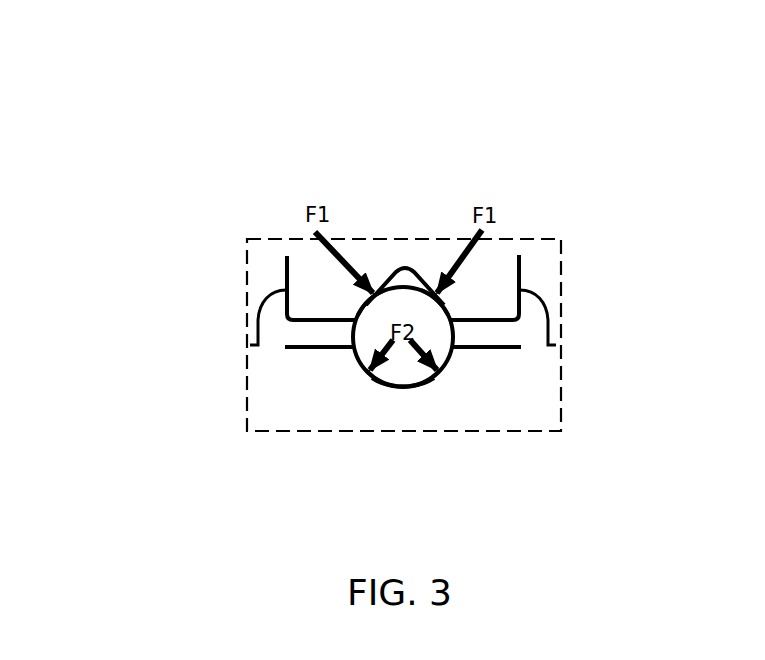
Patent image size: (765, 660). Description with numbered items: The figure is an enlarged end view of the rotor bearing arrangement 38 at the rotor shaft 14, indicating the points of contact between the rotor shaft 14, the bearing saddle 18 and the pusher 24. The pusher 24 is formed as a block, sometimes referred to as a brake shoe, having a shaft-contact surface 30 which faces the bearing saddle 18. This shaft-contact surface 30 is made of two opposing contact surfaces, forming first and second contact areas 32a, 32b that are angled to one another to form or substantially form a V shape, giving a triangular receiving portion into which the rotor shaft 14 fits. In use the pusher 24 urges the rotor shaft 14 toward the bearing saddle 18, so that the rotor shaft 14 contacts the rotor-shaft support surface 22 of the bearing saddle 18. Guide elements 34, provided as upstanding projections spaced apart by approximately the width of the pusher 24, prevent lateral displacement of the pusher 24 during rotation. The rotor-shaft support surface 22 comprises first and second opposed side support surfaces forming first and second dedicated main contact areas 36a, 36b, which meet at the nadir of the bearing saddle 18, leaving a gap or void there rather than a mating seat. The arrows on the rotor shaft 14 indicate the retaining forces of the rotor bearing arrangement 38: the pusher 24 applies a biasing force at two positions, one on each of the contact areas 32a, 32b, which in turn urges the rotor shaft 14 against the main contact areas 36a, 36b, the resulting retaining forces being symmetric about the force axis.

The rotor bearing arrangement 38 is at (138, 137).
The rotor shaft 14 is at (450, 333).
The pusher 24 is at (287, 263).
The shaft-contact surface 30 is at (458, 313).
The bearing saddle 18 is at (285, 382).
The guide elements 34 is at (270, 323).
The first contact area 32a is at (362, 303).
The second contact area 32b is at (448, 300).
The rotor-shaft support surface 22 is at (452, 370).
The first main contact area 36a is at (377, 387).
The second main contact area 36b is at (435, 380).